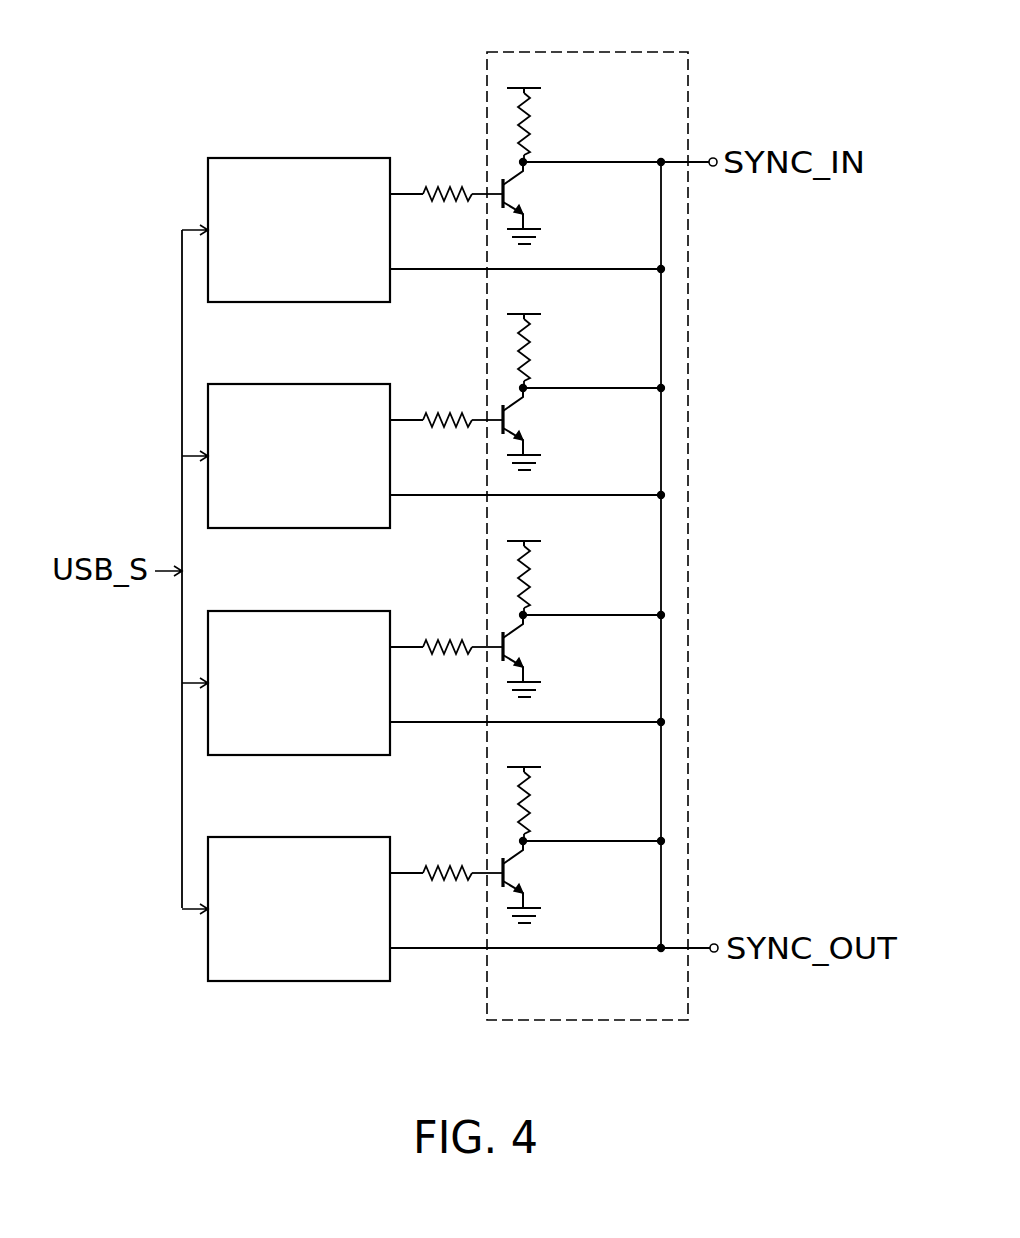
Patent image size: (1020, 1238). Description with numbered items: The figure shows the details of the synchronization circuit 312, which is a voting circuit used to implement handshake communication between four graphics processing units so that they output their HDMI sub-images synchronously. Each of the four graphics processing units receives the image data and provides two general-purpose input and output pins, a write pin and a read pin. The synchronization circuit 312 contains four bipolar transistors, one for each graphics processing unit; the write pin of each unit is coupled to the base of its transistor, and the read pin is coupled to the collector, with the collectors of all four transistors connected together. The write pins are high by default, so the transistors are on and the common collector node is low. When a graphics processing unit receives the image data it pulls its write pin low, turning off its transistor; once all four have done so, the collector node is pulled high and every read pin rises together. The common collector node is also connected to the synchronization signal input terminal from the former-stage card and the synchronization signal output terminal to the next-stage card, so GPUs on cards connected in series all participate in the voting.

The synchronization circuit 312 is at (487, 52).